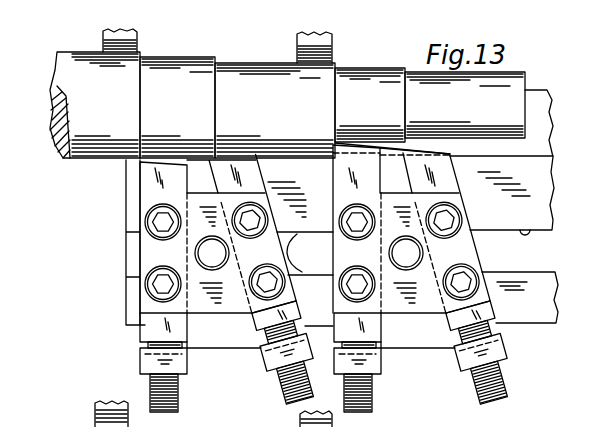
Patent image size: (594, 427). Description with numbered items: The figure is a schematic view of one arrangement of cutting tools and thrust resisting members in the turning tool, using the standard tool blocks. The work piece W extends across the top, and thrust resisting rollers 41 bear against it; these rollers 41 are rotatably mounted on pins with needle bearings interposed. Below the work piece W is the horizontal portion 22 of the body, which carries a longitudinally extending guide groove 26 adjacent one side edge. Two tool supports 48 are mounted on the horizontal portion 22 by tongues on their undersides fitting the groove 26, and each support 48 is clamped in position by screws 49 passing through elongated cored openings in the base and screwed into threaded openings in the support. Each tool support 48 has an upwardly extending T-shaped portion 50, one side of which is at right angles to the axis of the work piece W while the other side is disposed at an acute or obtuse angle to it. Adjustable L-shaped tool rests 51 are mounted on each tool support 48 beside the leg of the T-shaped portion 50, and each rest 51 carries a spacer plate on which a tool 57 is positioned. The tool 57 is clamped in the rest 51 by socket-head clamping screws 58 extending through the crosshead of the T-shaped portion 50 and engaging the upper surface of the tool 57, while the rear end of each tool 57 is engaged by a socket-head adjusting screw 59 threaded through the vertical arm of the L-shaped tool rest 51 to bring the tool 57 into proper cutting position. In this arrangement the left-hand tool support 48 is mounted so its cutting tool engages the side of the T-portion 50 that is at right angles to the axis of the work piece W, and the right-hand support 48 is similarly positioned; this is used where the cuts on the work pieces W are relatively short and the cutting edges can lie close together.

The work piece W is at (93, 152).
The thrust resisting rollers 41 is at (133, 37).
The horizontal portion of the body 22 is at (560, 322).
The guide groove 26 is at (520, 232).
The T-shaped portion 50 is at (145, 248).
The screws 49 is at (222, 251).
The clamping screws 58 is at (147, 288).
The tool 57 is at (178, 322).
The tool support 48 is at (233, 345).
The L-shaped tool rest 51 is at (147, 358).
The adjusting screw 59 is at (173, 398).